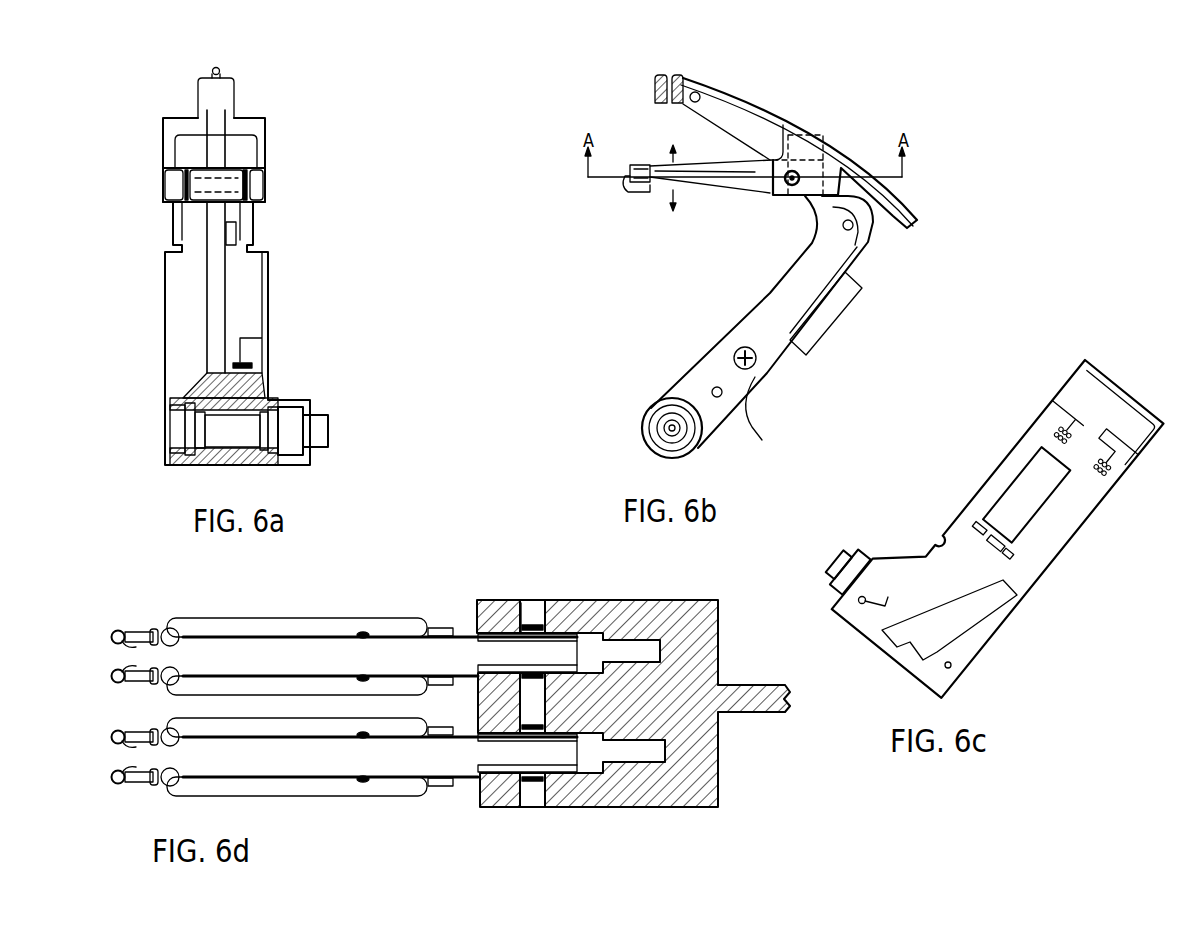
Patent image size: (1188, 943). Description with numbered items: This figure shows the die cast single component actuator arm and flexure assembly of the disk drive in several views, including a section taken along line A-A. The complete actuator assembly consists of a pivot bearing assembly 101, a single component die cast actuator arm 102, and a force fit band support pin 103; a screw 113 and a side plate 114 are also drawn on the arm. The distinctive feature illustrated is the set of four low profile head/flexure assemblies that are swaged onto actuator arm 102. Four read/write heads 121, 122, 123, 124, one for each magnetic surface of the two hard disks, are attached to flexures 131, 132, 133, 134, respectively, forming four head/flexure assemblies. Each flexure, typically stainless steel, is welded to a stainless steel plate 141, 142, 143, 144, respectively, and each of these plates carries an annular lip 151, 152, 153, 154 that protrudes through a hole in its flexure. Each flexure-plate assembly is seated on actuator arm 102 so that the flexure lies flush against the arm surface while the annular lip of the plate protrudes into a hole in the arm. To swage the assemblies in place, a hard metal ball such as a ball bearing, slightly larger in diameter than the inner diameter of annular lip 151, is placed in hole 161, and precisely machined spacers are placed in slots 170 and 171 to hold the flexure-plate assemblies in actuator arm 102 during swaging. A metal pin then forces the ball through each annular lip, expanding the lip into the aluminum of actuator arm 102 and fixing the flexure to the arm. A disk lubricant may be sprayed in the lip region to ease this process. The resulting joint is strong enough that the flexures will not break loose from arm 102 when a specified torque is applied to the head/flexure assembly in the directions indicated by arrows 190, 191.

In FIG. 6b, the pivot bearing assembly 101 is at (648, 425).
In FIG. 6b, the single component die cast actuator arm 102 is at (765, 310).
In FIG. 6d, the single component die cast actuator arm 102 is at (590, 600).
In FIG. 6b, the force fit band support pin 103 is at (668, 74).
In FIG. 6b, the screw 113 is at (760, 366).
In FIG. 6b, the cover plate 114 is at (845, 308).
In FIG. 6d, the read/write head 121 is at (175, 638).
In FIG. 6d, the read/write head 122 is at (133, 672).
In FIG. 6d, the read/write head 123 is at (175, 738).
In FIG. 6d, the read/write head 124 is at (133, 772).
In FIG. 6d, the flexure 131 is at (300, 630).
In FIG. 6d, the flexure 132 is at (380, 687).
In FIG. 6d, the flexure 133 is at (303, 730).
In FIG. 6d, the flexure 134 is at (298, 785).
In FIG. 6d, the stainless steel plate 141 is at (567, 637).
In FIG. 6d, the stainless steel plate 142 is at (485, 672).
In FIG. 6d, the stainless steel plate 143 is at (575, 737).
In FIG. 6d, the stainless steel plate 144 is at (482, 772).
In FIG. 6d, the annular lip 151 is at (537, 612).
In FIG. 6d, the annular lip 152 is at (517, 682).
In FIG. 6d, the annular lip 153 is at (515, 733).
In FIG. 6d, the annular lip 154 is at (537, 793).
In FIG. 6d, the hole 161 is at (527, 612).
In FIG. 6d, the slot 170 is at (527, 650).
In FIG. 6d, the slot 171 is at (527, 749).
In FIG. 6b, the arrow 190 is at (671, 215).
In FIG. 6b, the arrow 191 is at (674, 136).